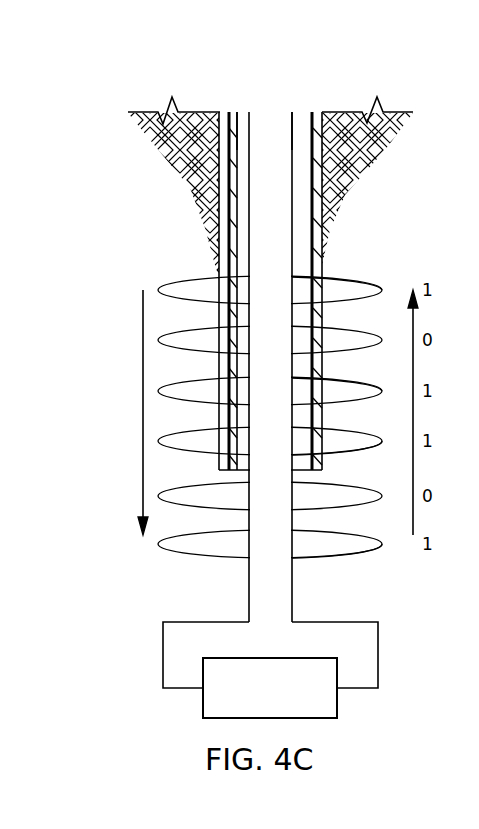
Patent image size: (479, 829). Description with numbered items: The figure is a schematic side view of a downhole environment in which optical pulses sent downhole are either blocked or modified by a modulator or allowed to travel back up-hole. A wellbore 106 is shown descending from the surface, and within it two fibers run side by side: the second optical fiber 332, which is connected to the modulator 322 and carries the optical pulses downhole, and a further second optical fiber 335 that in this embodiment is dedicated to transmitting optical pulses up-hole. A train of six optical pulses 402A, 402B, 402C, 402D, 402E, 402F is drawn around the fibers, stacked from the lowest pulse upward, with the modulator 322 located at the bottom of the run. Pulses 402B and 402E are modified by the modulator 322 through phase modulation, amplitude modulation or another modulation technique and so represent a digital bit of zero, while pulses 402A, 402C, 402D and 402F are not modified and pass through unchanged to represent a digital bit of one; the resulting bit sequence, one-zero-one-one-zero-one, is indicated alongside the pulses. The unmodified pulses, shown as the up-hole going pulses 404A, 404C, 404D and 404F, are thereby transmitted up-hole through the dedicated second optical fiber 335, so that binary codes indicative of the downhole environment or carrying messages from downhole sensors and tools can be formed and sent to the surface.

The wellbore casing 106 is at (220, 248).
The second optical fiber 332 is at (249, 124).
The second optical fiber 335 is at (305, 124).
The optical pulse 402A is at (170, 542).
The optical pulse 402B is at (172, 493).
The optical pulse 402C is at (172, 438).
The optical pulse 402D is at (172, 388).
The optical pulse 402E is at (172, 337).
The optical pulse 402F is at (172, 287).
The energized coil segment 404A is at (378, 255).
The energized coil segment 404C is at (378, 357).
The energized coil segment 404D is at (360, 455).
The energized coil segment 404F is at (362, 558).
The modulator 322 is at (203, 704).